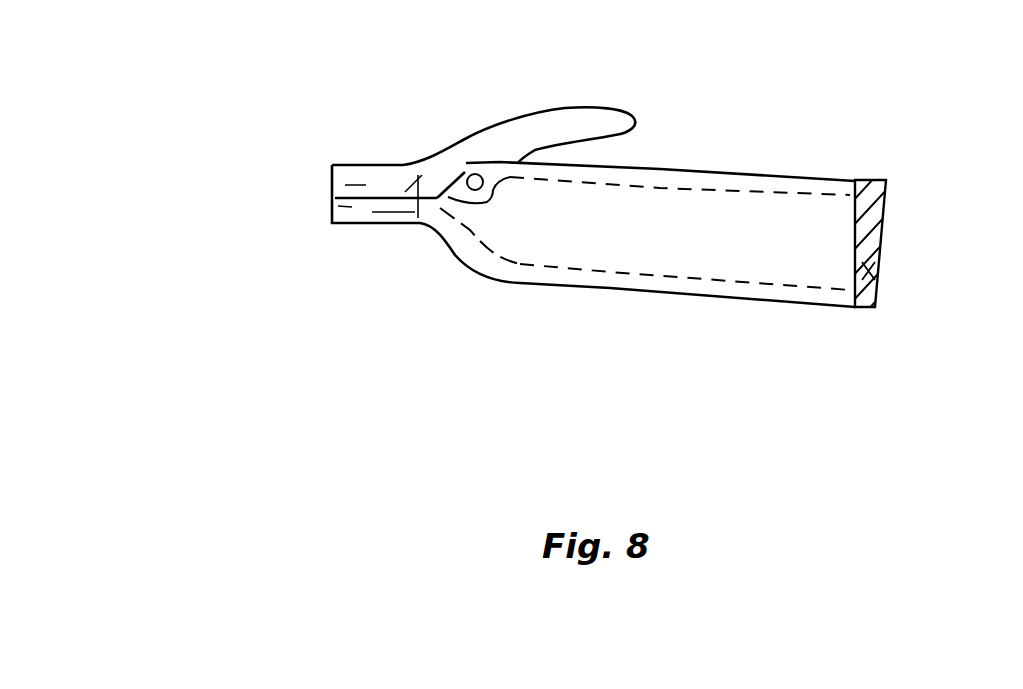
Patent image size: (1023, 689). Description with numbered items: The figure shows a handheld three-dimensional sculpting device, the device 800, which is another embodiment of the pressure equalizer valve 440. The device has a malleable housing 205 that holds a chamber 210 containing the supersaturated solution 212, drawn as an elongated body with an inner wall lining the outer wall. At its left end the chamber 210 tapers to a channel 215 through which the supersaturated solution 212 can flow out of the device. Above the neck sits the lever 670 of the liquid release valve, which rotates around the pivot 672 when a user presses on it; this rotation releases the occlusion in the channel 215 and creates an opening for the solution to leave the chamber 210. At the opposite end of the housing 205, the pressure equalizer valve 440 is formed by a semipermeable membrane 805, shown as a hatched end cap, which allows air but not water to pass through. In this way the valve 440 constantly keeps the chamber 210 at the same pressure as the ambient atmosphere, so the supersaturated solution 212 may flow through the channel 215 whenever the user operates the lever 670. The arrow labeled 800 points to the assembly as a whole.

The channel 215 is at (340, 183).
The lever 670 is at (597, 123).
The pivot 672 is at (467, 172).
The chamber 210 is at (703, 213).
The supersaturated solution 212 is at (597, 260).
The malleable housing 205 is at (762, 302).
The semipermeable membrane 805 is at (870, 242).
The pressure equalizer valve 440 is at (872, 277).
The 3D device 800 is at (860, 458).